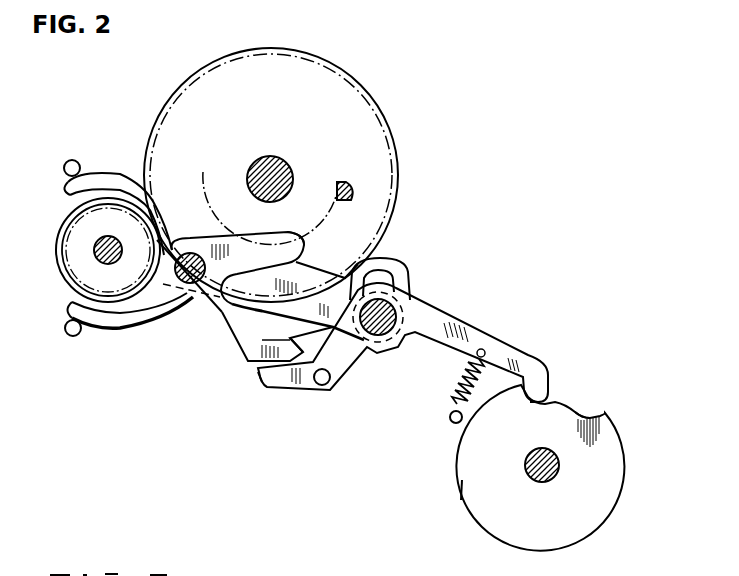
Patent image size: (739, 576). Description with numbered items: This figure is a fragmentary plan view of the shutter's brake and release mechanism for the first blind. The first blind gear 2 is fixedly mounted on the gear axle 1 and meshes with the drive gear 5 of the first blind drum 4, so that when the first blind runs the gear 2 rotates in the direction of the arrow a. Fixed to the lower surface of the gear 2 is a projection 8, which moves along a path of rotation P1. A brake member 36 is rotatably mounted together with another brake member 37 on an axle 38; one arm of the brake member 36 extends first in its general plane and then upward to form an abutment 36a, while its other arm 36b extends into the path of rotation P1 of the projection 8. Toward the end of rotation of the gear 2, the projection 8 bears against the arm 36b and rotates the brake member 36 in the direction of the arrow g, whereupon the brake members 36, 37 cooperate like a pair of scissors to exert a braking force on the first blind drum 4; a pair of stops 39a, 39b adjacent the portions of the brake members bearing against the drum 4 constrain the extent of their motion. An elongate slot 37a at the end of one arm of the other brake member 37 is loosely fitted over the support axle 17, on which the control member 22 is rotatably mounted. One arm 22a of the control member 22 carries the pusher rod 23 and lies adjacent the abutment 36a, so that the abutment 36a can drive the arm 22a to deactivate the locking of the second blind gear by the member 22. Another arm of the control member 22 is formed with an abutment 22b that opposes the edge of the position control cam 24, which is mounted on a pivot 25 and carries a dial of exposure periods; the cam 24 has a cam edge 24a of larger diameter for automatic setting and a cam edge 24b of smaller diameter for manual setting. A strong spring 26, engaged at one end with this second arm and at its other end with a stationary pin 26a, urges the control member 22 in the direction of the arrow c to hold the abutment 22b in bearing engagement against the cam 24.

The gear axle 1 is at (263, 164).
The first blind gear 2 is at (366, 118).
The first blind drum 4 is at (120, 287).
The drive gear 5 is at (58, 240).
The projection 8 is at (352, 184).
The support axle 17 is at (378, 335).
The control member 22 is at (448, 317).
The arm 22a is at (268, 382).
The abutment 22b is at (548, 383).
The pusher rod 23 is at (323, 385).
The position control cam 24 is at (470, 452).
The cam edge of larger diameter 24a is at (463, 490).
The cam edge of smaller diameter 24b is at (576, 406).
The pivot 25 is at (558, 468).
The strong spring 26 is at (468, 379).
The stationary pin 26a is at (449, 419).
The brake member 36 is at (240, 330).
The abutment 36a is at (308, 345).
The arm 36b is at (287, 241).
The other brake member 37 is at (266, 238).
The elongate slot 37a is at (380, 281).
The axle 38 is at (188, 285).
The stop 39a is at (74, 336).
The stop 39b is at (71, 160).
The arrow a is at (309, 174).
The arrow c is at (420, 360).
The arrow g is at (257, 290).
The path of rotation P1 is at (323, 225).